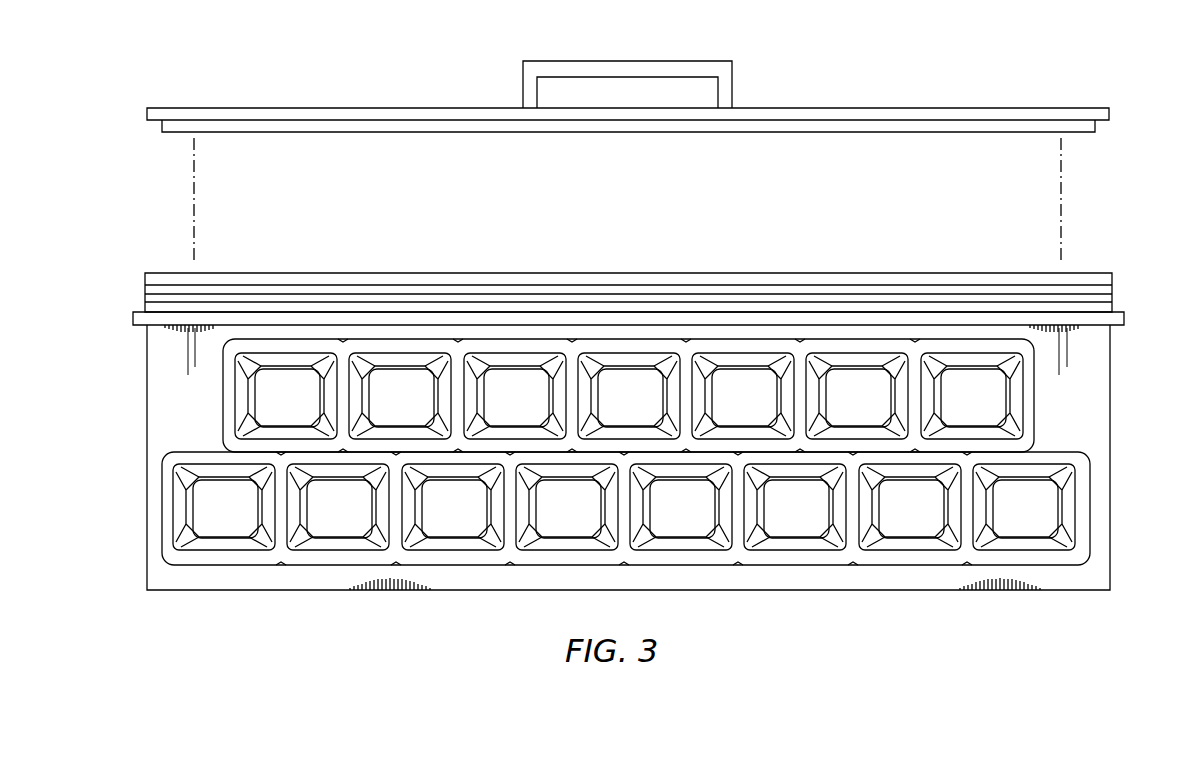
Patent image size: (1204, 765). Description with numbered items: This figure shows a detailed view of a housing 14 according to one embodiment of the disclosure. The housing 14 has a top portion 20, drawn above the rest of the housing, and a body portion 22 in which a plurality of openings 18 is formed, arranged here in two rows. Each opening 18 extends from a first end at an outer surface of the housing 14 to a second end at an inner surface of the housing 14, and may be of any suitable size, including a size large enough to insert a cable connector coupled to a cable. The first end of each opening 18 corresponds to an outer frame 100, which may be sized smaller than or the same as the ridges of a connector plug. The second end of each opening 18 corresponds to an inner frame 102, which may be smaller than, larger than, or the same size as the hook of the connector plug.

The housing 14 is at (666, 469).
The openings 18 is at (235, 513).
The top portion 20 is at (965, 108).
The body portion 22 is at (1110, 412).
The outer frame 100 is at (599, 395).
The inner frame 102 is at (252, 388).